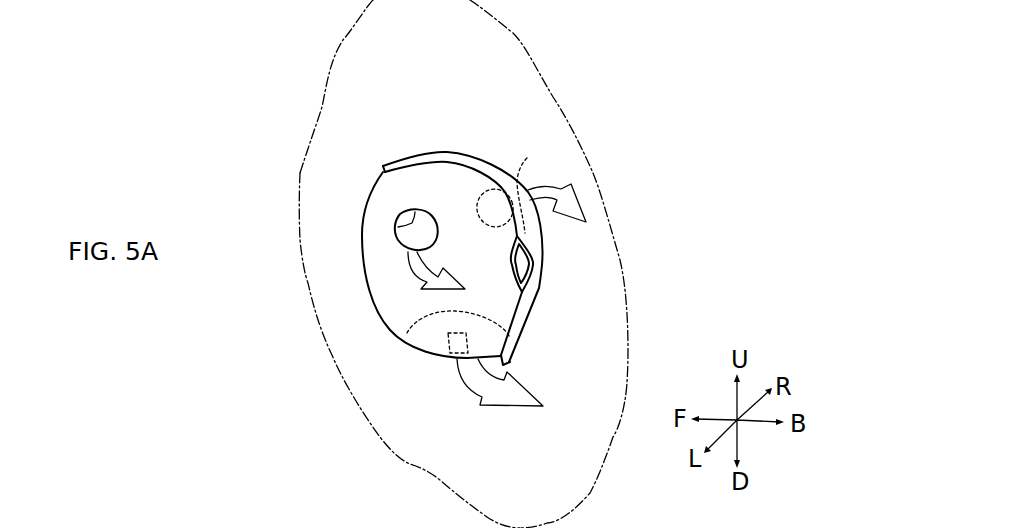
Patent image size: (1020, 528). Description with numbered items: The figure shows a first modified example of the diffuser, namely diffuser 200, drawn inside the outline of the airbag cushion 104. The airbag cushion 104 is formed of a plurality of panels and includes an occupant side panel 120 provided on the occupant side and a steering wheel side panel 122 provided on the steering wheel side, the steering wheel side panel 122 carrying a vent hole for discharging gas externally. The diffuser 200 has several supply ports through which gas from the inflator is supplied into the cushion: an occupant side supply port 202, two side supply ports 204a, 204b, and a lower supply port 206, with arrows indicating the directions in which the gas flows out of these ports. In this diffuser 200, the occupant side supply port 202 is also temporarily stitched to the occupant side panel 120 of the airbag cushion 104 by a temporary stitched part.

The airbag cushion 104 is at (513, 33).
The occupant side panel 120 is at (552, 108).
The steering wheel side panel 122 is at (305, 283).
The diffuser 200 is at (478, 163).
The occupant side supply port 202 is at (527, 283).
The side supply port 204a is at (398, 227).
The side supply port 204b is at (525, 191).
The lower supply port 206 is at (420, 320).